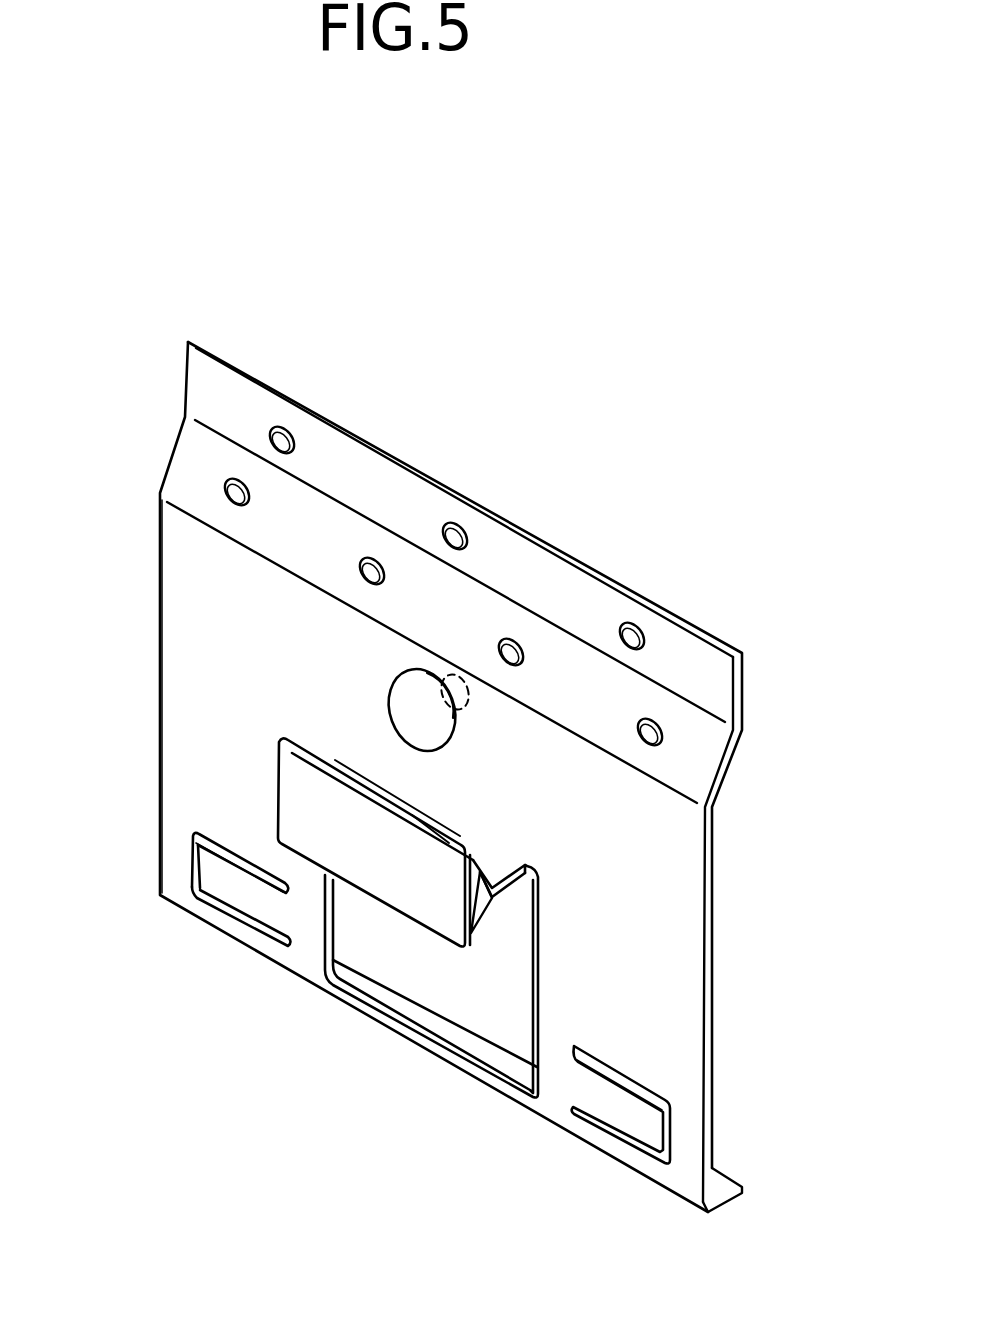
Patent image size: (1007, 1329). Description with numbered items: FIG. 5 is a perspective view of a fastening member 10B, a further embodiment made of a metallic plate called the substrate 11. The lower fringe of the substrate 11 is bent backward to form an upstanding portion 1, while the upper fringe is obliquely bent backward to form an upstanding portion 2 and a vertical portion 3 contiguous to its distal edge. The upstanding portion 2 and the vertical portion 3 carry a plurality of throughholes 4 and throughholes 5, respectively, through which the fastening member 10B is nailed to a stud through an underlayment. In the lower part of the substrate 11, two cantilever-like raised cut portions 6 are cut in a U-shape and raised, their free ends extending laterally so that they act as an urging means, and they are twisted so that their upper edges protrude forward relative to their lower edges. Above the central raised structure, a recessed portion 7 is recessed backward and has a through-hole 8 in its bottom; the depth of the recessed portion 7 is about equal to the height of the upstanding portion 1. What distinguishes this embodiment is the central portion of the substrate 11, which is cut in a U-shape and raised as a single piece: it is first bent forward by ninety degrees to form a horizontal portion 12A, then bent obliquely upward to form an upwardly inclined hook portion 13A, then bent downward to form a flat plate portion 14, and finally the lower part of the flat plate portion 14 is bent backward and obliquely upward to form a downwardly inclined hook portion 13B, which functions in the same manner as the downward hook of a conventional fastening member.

The fastening member 10B is at (735, 397).
The upstanding portion 1 is at (720, 1180).
The upstanding portion 2 is at (697, 753).
The vertical portion 3 is at (710, 677).
The throughholes 4 is at (377, 563).
The throughholes 5 is at (457, 530).
The raised cut portions 6 is at (217, 877).
The recessed portion 7 is at (407, 698).
The through-hole 8 is at (452, 668).
The substrate 11 is at (660, 967).
The horizontal portion 12A is at (500, 862).
The upwardly inclined hook portion 13A is at (480, 860).
The downwardly inclined hook portion 13B is at (478, 908).
The flat plate portion 14 is at (323, 815).